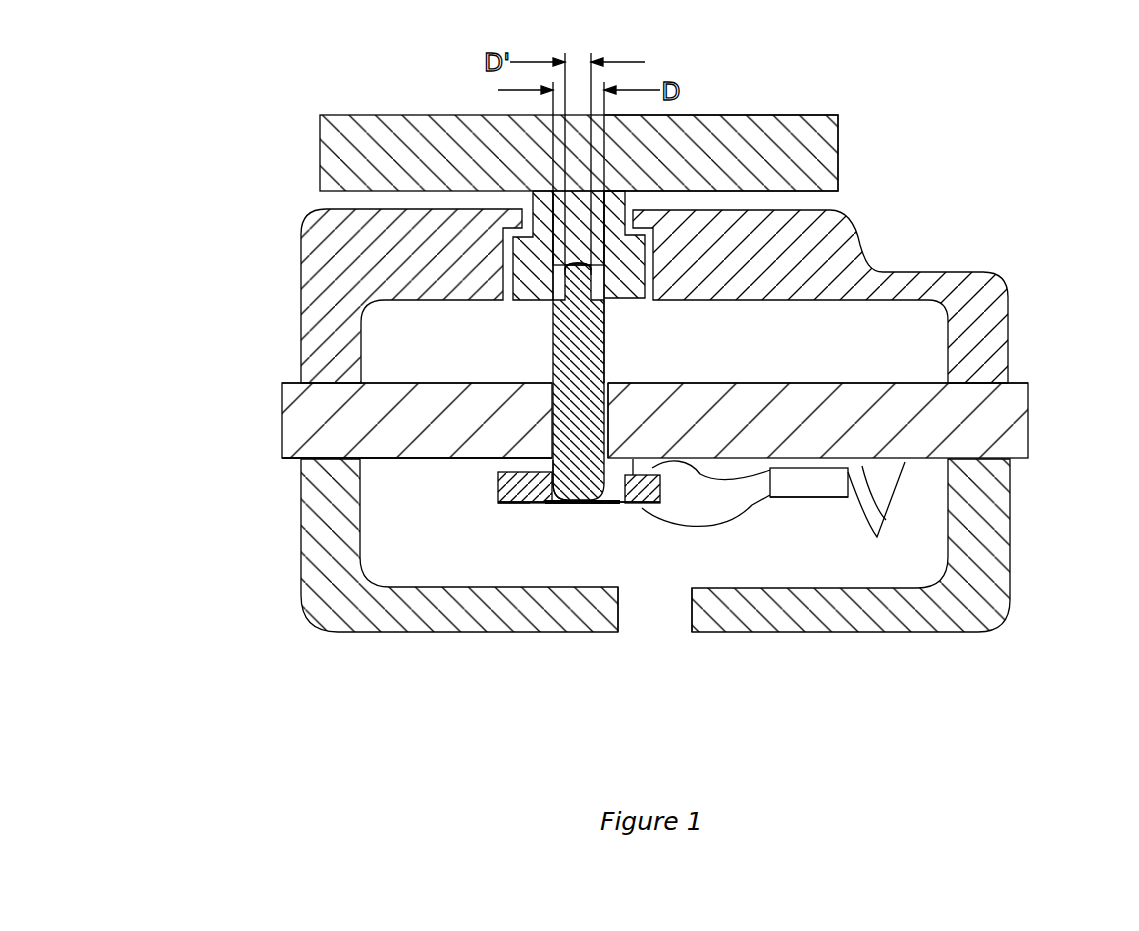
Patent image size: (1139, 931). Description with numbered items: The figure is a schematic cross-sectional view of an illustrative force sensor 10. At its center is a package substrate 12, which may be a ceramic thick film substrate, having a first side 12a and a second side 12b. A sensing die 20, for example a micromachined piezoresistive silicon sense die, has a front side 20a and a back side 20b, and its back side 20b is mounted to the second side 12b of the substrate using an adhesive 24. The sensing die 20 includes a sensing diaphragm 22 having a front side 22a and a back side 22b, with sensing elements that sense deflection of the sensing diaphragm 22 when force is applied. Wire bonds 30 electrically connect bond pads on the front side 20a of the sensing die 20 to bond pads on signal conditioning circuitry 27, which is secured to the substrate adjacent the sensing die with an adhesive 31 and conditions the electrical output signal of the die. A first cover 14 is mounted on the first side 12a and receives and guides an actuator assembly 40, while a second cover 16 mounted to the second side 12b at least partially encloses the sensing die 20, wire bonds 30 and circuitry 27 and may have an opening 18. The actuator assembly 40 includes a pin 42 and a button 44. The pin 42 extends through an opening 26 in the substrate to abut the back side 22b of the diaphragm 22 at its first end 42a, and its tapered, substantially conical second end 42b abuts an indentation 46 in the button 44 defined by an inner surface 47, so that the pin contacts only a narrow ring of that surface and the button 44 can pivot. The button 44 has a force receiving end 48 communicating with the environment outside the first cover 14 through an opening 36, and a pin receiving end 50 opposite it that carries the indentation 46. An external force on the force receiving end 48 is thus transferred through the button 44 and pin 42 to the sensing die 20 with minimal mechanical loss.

The force sensor 10 is at (1033, 218).
The package substrate 12 is at (280, 420).
The first side 12a is at (288, 380).
The second side 12b is at (288, 462).
The first cover 14 is at (1010, 320).
The second cover 16 is at (1010, 582).
The opening 18 is at (677, 635).
The sensing die 20 is at (493, 492).
The front side 20a is at (514, 504).
The back side 20b is at (660, 475).
The sensing diaphragm 22 is at (590, 504).
The front side 22a is at (553, 504).
The back side 22b is at (628, 503).
The adhesive 24 is at (808, 383).
The opening 26 is at (604, 380).
The signal conditioning circuitry 27 is at (814, 497).
The wire bonds 30 is at (730, 525).
The adhesive 31 is at (850, 474).
The opening 36 is at (507, 285).
The actuator assembly 40 is at (862, 142).
The pin 42 is at (553, 352).
The first end 42a is at (548, 468).
The second end 42b is at (620, 327).
The button 44 is at (318, 150).
The indentation 46 is at (566, 318).
The inner surface 47 is at (568, 262).
The force receiving end 48 is at (765, 95).
The pin receiving end 50 is at (660, 312).